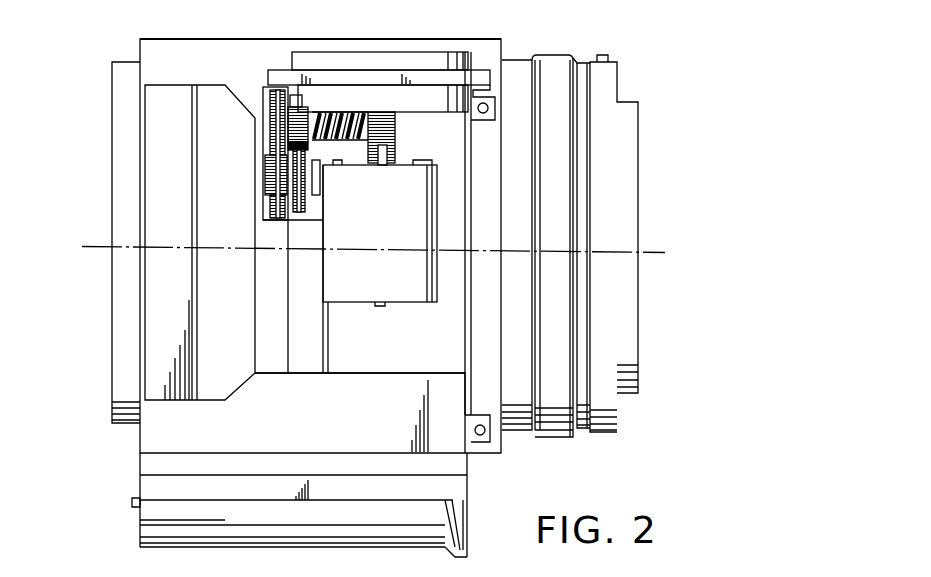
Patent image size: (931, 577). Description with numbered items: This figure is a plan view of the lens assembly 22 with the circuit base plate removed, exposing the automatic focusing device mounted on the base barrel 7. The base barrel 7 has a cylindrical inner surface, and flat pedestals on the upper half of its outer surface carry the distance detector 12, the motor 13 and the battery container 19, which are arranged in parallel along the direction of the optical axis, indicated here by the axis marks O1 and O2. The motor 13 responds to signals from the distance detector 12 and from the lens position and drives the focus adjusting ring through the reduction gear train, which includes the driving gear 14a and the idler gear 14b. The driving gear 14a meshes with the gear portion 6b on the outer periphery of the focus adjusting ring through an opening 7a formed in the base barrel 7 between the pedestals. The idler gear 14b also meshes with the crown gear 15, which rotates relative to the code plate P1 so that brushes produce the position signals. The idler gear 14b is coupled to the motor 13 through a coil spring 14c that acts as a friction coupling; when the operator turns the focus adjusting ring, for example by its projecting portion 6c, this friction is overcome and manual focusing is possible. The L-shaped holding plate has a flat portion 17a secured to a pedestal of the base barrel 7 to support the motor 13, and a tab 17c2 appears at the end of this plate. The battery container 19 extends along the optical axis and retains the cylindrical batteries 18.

The base barrel 7 is at (233, 53).
The projecting portion 6c is at (118, 80).
The distance detector 12 is at (193, 97).
The code plate P1 is at (378, 77).
The crown gear 15 is at (417, 102).
The mounting tab of plate 17c 17c2 is at (485, 440).
The gear portion 6b is at (271, 210).
The driving gear 14a is at (263, 173).
The idler gear 14b is at (297, 105).
The coil spring 14c is at (350, 138).
The opening 7a is at (317, 150).
The motor 13 is at (413, 298).
The flat portion 17a is at (380, 367).
The battery container 19 is at (235, 493).
The batteries 18 is at (145, 527).
The lens assembly 22 is at (583, 442).
The optical axis left O1 is at (360, 249).
The optical axis right O2 is at (681, 255).